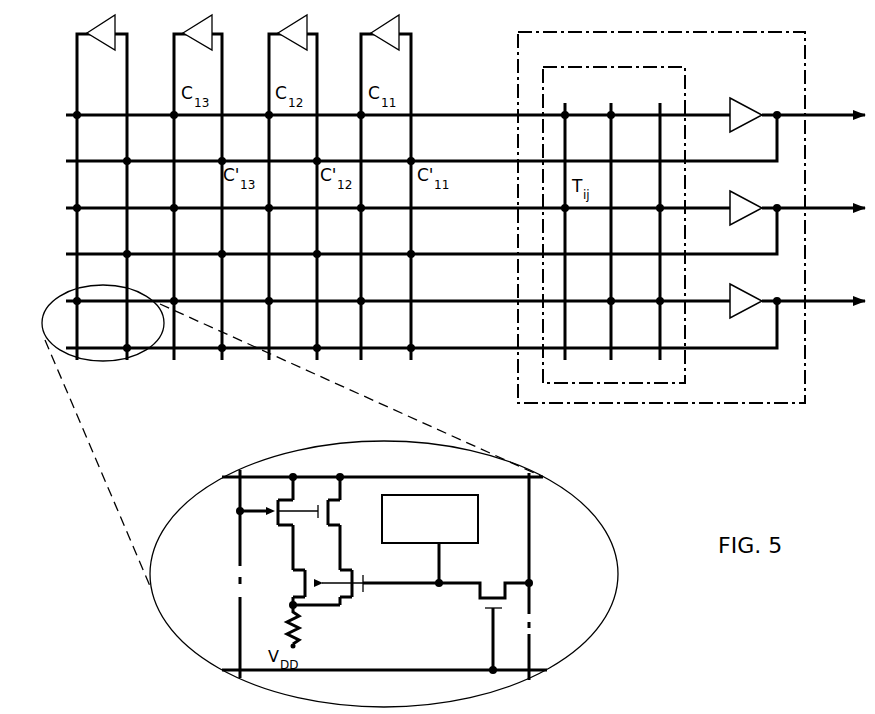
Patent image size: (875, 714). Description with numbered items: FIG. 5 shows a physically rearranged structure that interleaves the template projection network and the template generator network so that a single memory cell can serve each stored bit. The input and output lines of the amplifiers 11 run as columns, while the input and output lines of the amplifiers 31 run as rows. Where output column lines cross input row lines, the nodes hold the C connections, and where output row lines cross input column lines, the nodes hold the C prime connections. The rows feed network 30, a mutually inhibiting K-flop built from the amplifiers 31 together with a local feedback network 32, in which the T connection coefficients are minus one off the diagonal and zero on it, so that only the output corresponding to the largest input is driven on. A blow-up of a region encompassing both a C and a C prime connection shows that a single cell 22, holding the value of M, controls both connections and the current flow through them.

The amplifier 11 is at (386, 182).
The cell 22 is at (479, 520).
The network 30 is at (752, 388).
The amplifier 31 is at (798, 201).
The feedback network 32 is at (597, 90).